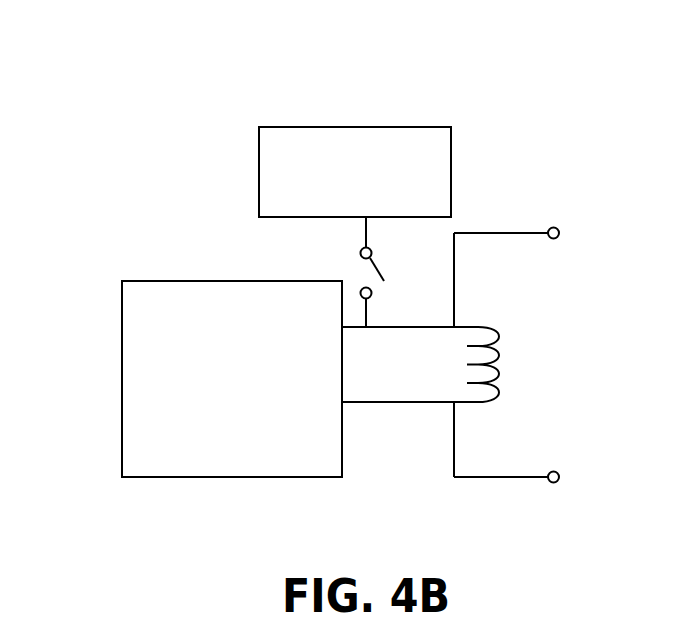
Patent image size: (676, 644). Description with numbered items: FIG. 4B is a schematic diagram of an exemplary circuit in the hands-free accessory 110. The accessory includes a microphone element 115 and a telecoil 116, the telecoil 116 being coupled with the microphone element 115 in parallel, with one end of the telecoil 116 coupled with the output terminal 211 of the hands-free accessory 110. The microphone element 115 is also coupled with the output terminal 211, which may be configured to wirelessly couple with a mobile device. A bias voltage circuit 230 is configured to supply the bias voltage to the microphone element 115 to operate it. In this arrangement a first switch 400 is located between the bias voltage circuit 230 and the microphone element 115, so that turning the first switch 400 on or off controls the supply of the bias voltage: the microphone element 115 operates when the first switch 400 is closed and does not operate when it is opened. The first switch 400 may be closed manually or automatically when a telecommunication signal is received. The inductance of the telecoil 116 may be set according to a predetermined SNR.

The hands-free accessory 110 is at (145, 134).
The bias voltage circuit 230 is at (355, 172).
The first switch 400 is at (395, 272).
The microphone element 115 is at (232, 379).
The telecoil 116 is at (493, 364).
The output terminal 211 is at (553, 228).